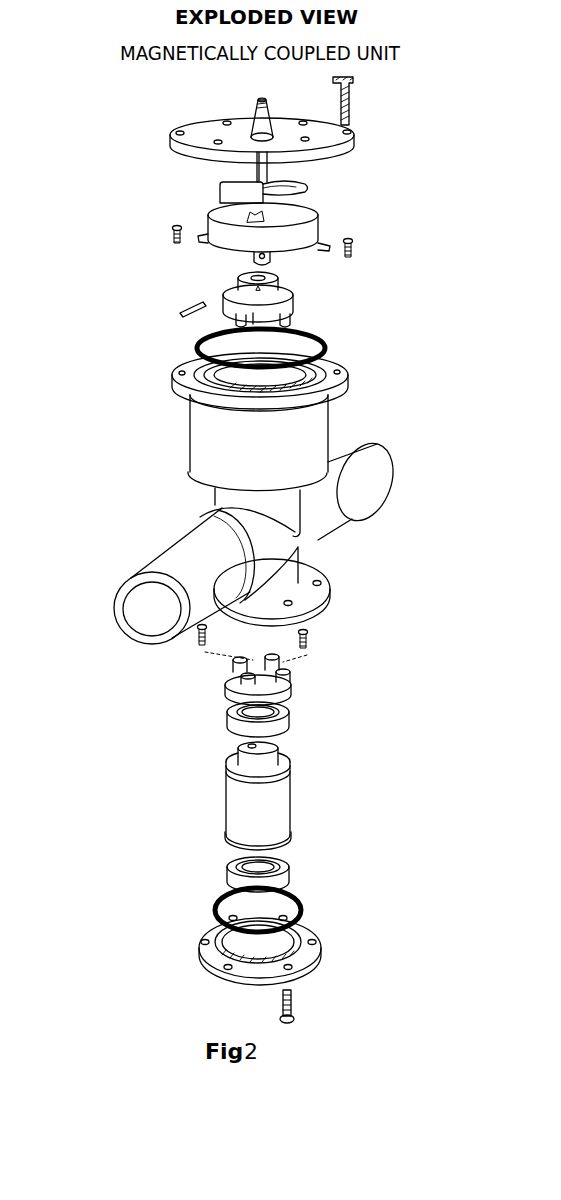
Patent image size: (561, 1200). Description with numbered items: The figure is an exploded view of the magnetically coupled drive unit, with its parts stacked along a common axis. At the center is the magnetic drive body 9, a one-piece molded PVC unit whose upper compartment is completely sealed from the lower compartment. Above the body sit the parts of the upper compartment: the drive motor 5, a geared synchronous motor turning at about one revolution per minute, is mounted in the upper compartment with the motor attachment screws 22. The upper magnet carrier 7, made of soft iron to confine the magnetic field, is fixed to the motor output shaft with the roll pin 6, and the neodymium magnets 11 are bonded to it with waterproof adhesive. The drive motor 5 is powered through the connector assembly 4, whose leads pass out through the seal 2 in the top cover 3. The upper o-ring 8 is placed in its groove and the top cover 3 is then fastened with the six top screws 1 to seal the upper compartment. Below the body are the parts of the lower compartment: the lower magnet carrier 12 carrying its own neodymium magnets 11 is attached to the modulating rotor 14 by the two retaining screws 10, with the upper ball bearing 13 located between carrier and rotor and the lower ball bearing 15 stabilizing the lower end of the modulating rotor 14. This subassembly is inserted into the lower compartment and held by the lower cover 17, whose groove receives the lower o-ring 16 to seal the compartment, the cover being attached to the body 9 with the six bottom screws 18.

The top screws 1 is at (357, 97).
The seal 2 is at (250, 115).
The top cover 3 is at (357, 137).
The connector assembly 4 is at (217, 192).
The drive motor 5 is at (330, 222).
The roll pin 6 is at (180, 300).
The upper magnet carrier 7 is at (293, 292).
The upper o-ring 8 is at (332, 342).
The magnetic drive body 9 is at (180, 433).
The retaining screws 10 is at (200, 640).
The neodymium magnets 11 is at (233, 325).
The lower magnet carrier 12 is at (227, 688).
The upper ball bearing 13 is at (225, 718).
The modulating rotor 14 is at (293, 795).
The lower ball bearing 15 is at (220, 873).
The lower o-ring 16 is at (307, 903).
The lower cover 17 is at (193, 953).
The bottom screws 18 is at (298, 997).
The motor attachment screws 22 is at (167, 240).